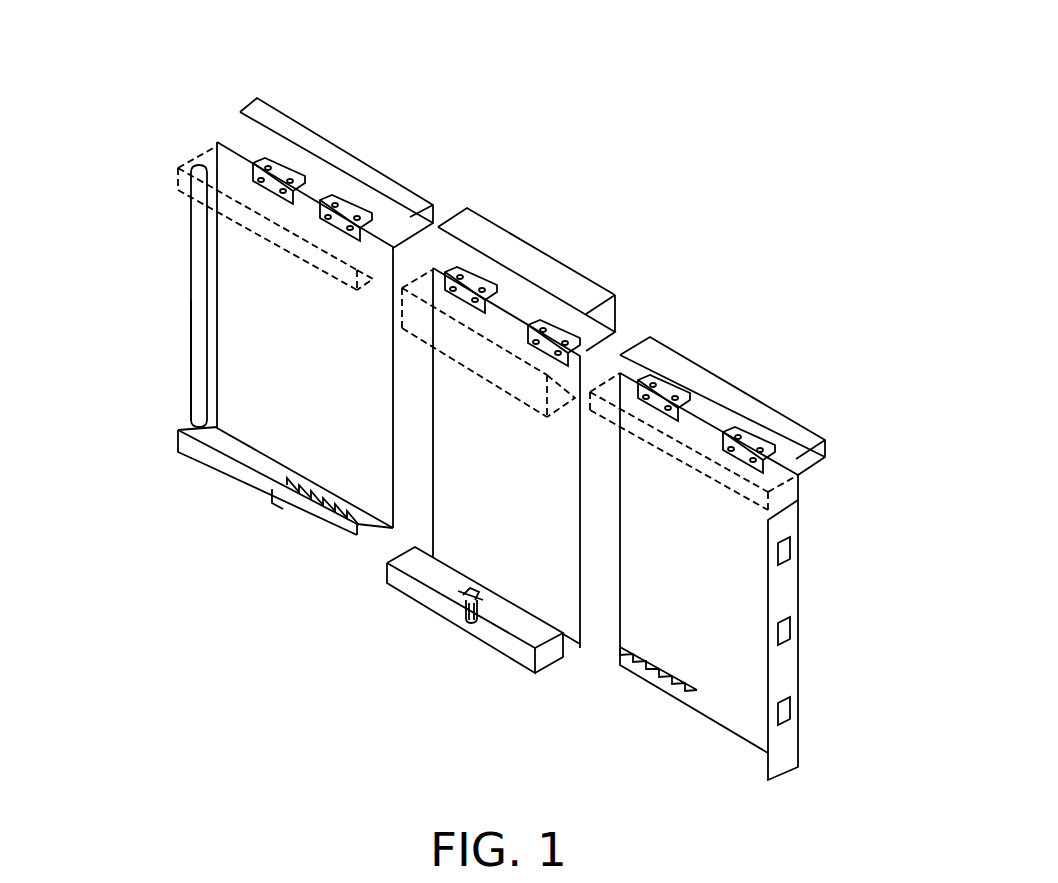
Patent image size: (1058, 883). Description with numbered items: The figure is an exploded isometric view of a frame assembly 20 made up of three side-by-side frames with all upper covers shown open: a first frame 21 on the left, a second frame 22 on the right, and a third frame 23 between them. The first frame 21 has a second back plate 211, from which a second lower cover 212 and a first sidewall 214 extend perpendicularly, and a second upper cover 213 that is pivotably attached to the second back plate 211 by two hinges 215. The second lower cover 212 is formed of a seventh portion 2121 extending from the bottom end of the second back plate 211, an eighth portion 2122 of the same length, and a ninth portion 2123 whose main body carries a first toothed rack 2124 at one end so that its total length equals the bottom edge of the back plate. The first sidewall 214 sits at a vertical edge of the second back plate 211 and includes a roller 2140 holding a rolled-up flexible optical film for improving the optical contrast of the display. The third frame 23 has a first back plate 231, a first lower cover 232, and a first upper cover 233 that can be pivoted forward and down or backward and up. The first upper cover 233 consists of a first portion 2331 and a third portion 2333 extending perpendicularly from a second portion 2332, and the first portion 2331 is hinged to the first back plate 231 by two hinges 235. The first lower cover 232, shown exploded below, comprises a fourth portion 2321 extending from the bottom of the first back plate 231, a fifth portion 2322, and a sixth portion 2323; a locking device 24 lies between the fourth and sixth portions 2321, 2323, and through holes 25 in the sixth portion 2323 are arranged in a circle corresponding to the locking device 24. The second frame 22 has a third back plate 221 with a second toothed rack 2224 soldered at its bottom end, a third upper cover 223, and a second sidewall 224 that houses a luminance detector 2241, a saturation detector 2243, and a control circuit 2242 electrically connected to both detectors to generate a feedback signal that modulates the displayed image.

The frame assembly 20 is at (548, 37).
The first frame 21 is at (166, 288).
The second back plate 211 is at (252, 373).
The second lower cover 212 is at (137, 548).
The seventh portion 2121 is at (270, 463).
The eighth portion 2122 is at (232, 475).
The ninth portion 2123 is at (193, 455).
The first toothed rack 2124 is at (303, 502).
The second upper cover 213 is at (352, 167).
The first sidewall 214 is at (210, 230).
The roller 2140 is at (200, 310).
The hinges 215 is at (258, 158).
The second frame 22 is at (767, 380).
The third back plate 221 is at (727, 697).
The second toothed rack 2224 is at (625, 668).
The third upper cover 223 is at (826, 446).
The second sidewall 224 is at (785, 745).
The luminance detector 2241 is at (790, 713).
The control circuit 2242 is at (790, 630).
The saturation detector 2243 is at (790, 552).
The third frame 23 is at (491, 204).
The first back plate 231 is at (570, 615).
The first lower cover 232 is at (358, 716).
The fourth portion 2321 is at (547, 653).
The fifth portion 2322 is at (445, 607).
The sixth portion 2323 is at (508, 620).
The first upper cover 233 is at (730, 238).
The first portion 2331 is at (590, 337).
The second portion 2332 is at (608, 308).
The third portion 2333 is at (590, 288).
The hinges 235 is at (555, 327).
The locking device 24 is at (458, 593).
The through holes 25 is at (462, 592).